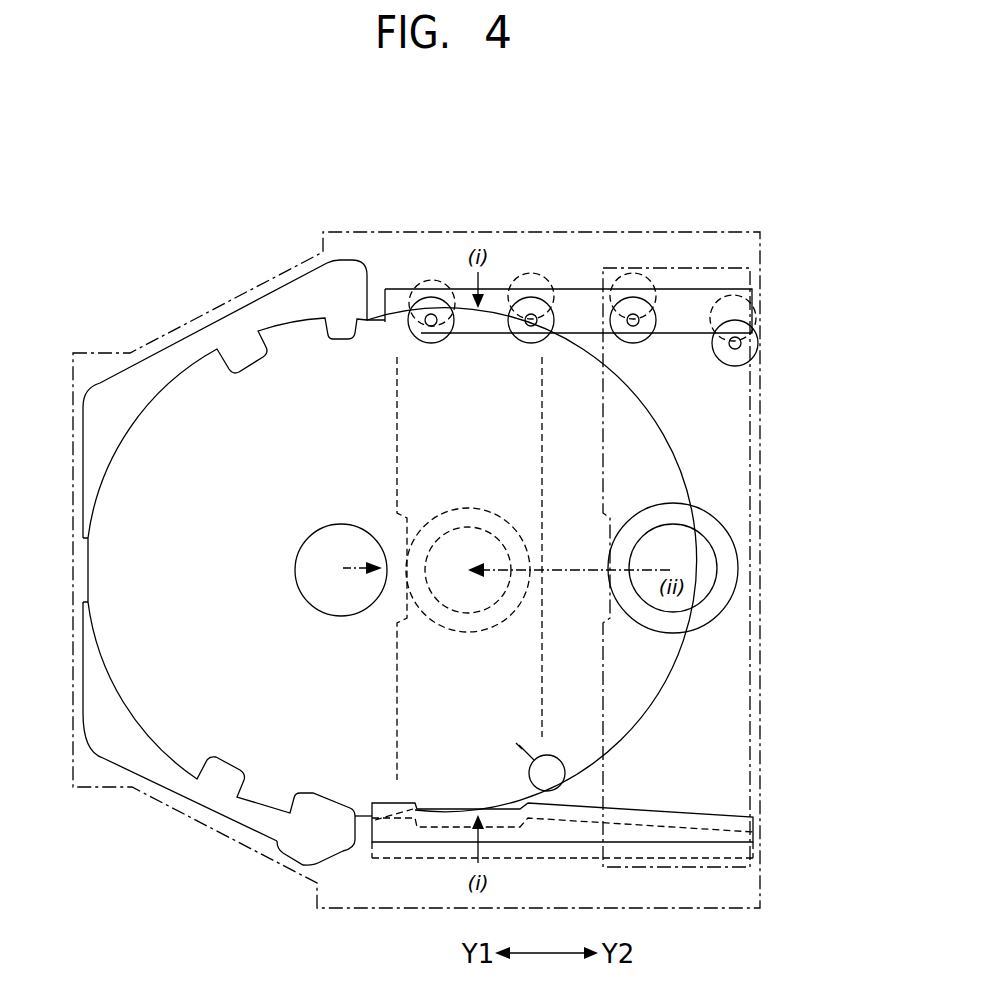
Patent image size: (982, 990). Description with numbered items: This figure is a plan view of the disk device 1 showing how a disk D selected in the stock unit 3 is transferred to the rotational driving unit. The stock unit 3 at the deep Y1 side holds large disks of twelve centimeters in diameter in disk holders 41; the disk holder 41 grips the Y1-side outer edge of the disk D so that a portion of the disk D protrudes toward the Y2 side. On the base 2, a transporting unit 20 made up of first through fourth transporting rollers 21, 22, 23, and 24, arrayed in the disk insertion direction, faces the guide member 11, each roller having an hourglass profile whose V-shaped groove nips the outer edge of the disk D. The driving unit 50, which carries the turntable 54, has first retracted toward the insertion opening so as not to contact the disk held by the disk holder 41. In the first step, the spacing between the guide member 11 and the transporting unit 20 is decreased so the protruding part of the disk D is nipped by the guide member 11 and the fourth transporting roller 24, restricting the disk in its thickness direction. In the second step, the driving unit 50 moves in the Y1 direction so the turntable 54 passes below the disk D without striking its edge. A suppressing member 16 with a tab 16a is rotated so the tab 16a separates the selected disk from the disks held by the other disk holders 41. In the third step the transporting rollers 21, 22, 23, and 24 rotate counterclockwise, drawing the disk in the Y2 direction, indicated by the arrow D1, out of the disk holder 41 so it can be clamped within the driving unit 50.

The disk device 1 is at (498, 217).
The base 2 is at (413, 231).
The stock unit 3 is at (273, 780).
The guide member 11 is at (397, 832).
The suppressing member 16 is at (561, 757).
The tab 16a is at (517, 738).
The transporting unit 20 is at (567, 278).
The first transporting roller 21 is at (735, 366).
The second transporting roller 22 is at (636, 344).
The third transporting roller 23 is at (531, 344).
The fourth transporting roller 24 is at (431, 344).
The disk holder 41 is at (176, 358).
The driving unit 50 is at (728, 745).
The turntable 54 is at (722, 593).
The disk D is at (557, 437).
The disc rotation indicator D1 is at (322, 606).